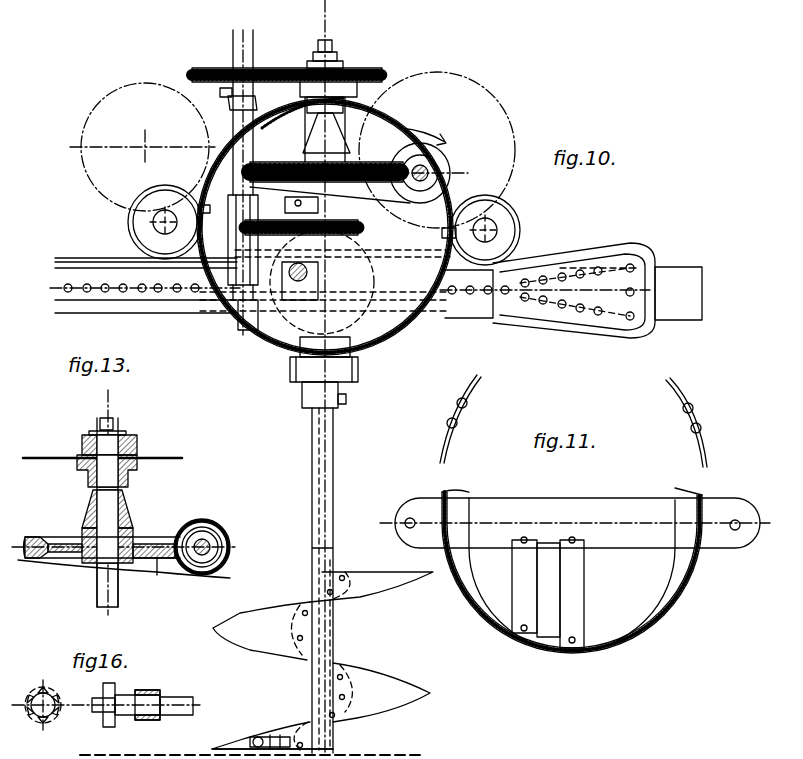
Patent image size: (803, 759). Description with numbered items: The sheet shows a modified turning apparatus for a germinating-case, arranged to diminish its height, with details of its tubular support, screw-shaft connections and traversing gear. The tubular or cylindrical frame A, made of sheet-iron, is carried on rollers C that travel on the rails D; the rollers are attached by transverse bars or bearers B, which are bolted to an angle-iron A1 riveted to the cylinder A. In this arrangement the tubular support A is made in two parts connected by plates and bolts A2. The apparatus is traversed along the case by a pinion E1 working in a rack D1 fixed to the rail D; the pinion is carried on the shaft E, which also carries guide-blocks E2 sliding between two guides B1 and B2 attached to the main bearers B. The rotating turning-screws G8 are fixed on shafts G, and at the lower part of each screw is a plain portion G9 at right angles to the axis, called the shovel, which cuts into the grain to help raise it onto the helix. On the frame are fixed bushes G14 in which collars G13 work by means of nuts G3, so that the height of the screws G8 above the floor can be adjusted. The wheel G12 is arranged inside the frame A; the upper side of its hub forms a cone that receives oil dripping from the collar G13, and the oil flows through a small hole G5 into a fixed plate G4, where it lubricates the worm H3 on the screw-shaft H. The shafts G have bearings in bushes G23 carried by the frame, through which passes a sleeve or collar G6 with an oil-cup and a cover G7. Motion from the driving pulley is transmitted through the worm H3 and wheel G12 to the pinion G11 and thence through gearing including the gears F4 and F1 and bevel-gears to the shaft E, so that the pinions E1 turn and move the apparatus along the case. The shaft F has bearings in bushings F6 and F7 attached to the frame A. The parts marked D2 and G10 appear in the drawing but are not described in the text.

In FIG. 10, the tubular frame A is at (292, 213).
In FIG. 13, the tubular frame A is at (108, 457).
In FIG. 11, the tubular frame A is at (572, 570).
In FIG. 10, the angle-iron A1 is at (339, 109).
In FIG. 11, the angle-iron A1 is at (688, 420).
In FIG. 11, the plates and bolts A2 is at (452, 410).
In FIG. 10, the transverse bearers B is at (329, 229).
In FIG. 11, the transverse bearers B is at (577, 523).
In FIG. 11, the guide B1 is at (536, 587).
In FIG. 11, the guide B2 is at (572, 592).
In FIG. 10, the rollers C is at (324, 219).
In FIG. 10, the rails D is at (376, 290).
In FIG. 10, the rack D1 is at (146, 285).
In FIG. 10, the rail end plate D2 is at (572, 292).
In FIG. 16, the shaft E is at (184, 704).
In FIG. 16, the pinion E1 is at (77, 691).
In FIG. 16, the guide-blocks E2 is at (142, 693).
In FIG. 10, the shaft F is at (240, 247).
In FIG. 10, the gear F1 is at (315, 216).
In FIG. 10, the gear F4 is at (287, 60).
In FIG. 10, the bushing F6 is at (230, 112).
In FIG. 10, the bushing F7 is at (258, 325).
In FIG. 10, the turning-screw shaft G is at (319, 580).
In FIG. 13, the turning-screw shaft G is at (107, 595).
In FIG. 10, the nuts G3 is at (332, 44).
In FIG. 13, the nuts G3 is at (113, 425).
In FIG. 10, the fixed plate G4 is at (340, 135).
In FIG. 13, the fixed plate G4 is at (128, 515).
In FIG. 13, the small hole G5 is at (176, 535).
In FIG. 10, the sleeve or collar G6 is at (335, 395).
In FIG. 10, the cover G7 is at (290, 372).
In FIG. 10, the turning-screws G8 is at (382, 684).
In FIG. 10, the shovel G9 is at (262, 741).
In FIG. 10, the auger bolt G10 is at (275, 736).
In FIG. 10, the pinion G11 is at (348, 76).
In FIG. 10, the worm wheel G12 is at (330, 171).
In FIG. 13, the worm wheel G12 is at (102, 537).
In FIG. 13, the collar G13 is at (126, 512).
In FIG. 13, the bush G14 is at (118, 471).
In FIG. 10, the bush G23 is at (350, 345).
In FIG. 10, the screw-shaft H is at (429, 173).
In FIG. 13, the worm H3 is at (204, 540).